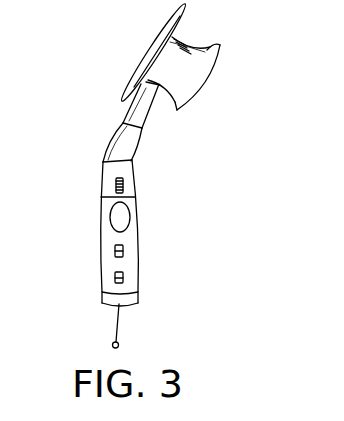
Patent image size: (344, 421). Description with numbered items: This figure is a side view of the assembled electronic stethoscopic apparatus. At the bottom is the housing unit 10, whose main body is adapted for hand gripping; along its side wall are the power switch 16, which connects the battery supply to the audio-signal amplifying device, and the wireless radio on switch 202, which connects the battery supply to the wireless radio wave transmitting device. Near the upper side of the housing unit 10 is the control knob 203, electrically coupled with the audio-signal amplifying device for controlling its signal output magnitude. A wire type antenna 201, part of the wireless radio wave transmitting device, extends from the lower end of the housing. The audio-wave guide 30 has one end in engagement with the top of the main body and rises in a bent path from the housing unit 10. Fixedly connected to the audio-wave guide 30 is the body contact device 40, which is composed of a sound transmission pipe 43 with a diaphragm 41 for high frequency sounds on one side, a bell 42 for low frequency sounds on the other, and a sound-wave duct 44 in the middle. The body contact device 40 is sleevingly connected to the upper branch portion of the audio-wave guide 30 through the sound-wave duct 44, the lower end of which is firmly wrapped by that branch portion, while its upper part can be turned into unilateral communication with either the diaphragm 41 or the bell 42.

The body contact device 40 is at (200, 33).
The diaphragm 41 is at (160, 37).
The bell 42 is at (198, 82).
The sound transmission pipe 43 is at (185, 58).
The sound-wave duct 44 is at (155, 112).
The audio-wave guide 30 is at (134, 148).
The housing unit 10 is at (141, 240).
The control knob 203 is at (124, 187).
The power switch 16 is at (113, 254).
The wireless radio on switch 202 is at (113, 278).
The wire type antenna 201 is at (120, 320).